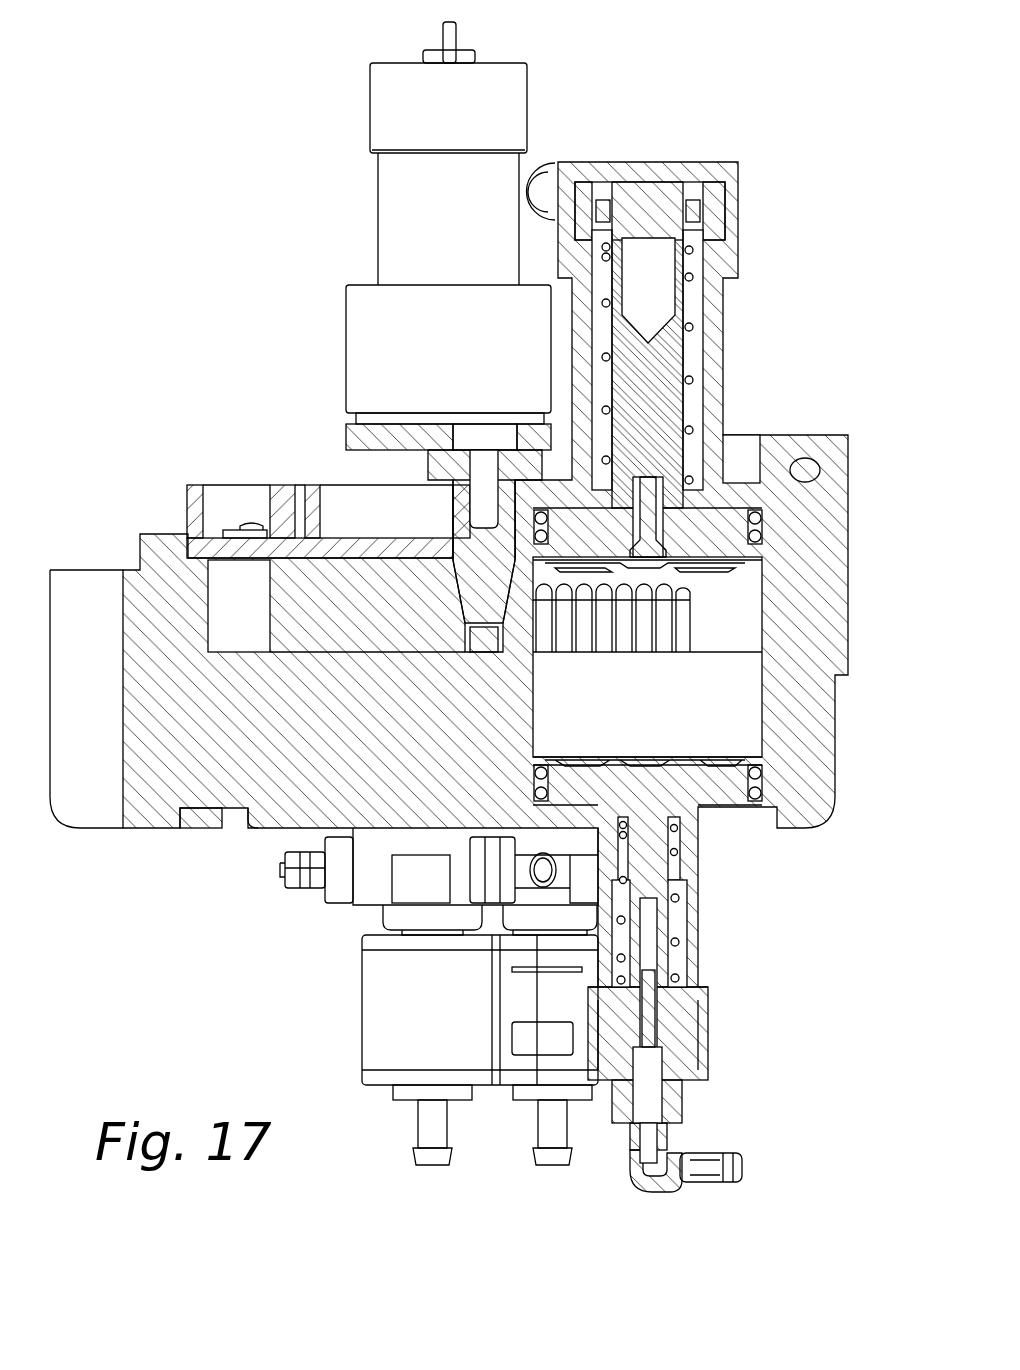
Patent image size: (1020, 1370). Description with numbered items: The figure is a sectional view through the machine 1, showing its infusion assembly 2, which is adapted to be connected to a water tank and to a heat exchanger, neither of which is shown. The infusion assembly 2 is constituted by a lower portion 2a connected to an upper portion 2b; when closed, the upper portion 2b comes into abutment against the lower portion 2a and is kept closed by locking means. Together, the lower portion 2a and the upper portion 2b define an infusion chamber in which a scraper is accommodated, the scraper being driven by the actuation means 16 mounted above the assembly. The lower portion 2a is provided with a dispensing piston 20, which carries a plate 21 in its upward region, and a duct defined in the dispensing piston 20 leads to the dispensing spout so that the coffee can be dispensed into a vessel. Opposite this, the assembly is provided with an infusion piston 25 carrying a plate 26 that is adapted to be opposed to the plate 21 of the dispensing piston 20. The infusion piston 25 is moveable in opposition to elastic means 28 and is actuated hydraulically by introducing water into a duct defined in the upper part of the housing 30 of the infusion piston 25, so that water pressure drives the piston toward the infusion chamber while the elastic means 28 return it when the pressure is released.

The machine 1 is at (165, 179).
The infusion assembly 2 is at (212, 849).
The lower portion 2a is at (150, 790).
The upper portion 2b is at (196, 503).
The actuation means 16 is at (392, 102).
The dispensing piston 20 is at (728, 805).
The plate 21 is at (663, 755).
The infusion piston 25 is at (668, 420).
The plate 26 is at (720, 560).
The elastic means 28 is at (698, 324).
The housing 30 is at (723, 352).